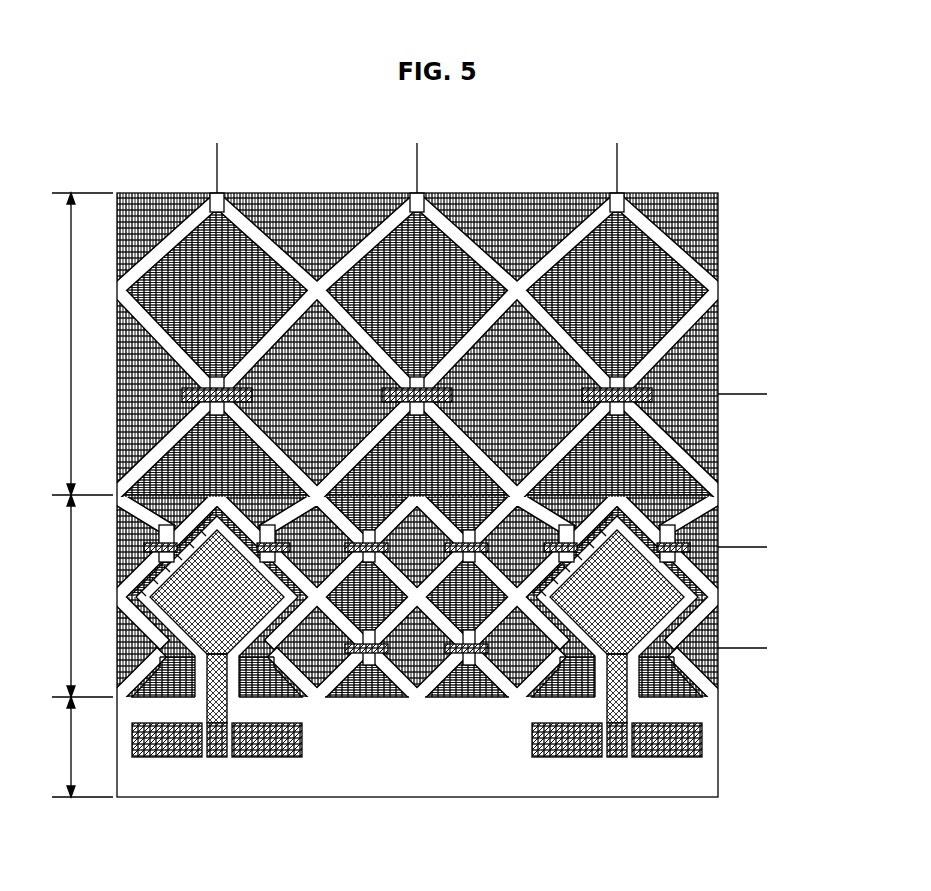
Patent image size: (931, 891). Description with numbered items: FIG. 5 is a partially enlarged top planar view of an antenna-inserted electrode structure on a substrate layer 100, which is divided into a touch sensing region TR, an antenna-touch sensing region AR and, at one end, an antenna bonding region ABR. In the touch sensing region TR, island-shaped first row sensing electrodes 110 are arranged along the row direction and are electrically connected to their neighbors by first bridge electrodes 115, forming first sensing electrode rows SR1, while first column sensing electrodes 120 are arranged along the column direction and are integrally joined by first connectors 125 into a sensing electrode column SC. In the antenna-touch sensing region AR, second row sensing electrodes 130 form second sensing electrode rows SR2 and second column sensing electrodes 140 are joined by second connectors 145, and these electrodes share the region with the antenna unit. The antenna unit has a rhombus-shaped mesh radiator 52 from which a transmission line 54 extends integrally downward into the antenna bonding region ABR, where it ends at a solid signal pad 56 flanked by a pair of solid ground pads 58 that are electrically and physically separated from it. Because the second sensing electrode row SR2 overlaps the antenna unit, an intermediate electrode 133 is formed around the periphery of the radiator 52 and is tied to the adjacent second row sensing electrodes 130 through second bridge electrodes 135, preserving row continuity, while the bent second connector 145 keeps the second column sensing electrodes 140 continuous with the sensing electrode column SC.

The substrate layer 100 is at (707, 777).
The first row sensing electrode 110 is at (522, 194).
The first bridge electrode 115 is at (655, 395).
The first column sensing electrode 120 is at (672, 275).
The first connector 125 is at (627, 188).
The second row sensing electrode 130 is at (675, 564).
The intermediate electrode 133 is at (672, 500).
The second bridge electrode 135 is at (670, 542).
The second column sensing electrode 140 is at (471, 693).
The second connector 145 is at (671, 606).
The radiator 52 is at (670, 613).
The transmission line 54 is at (699, 690).
The signal pad 56 is at (214, 760).
The ground pad 58 is at (146, 760).
The sensing electrode column SC is at (219, 168).
The first sensing electrode row SR1 is at (767, 394).
The second sensing electrode row SR2 is at (767, 547).
The touch sensing region TR is at (54, 344).
The antenna-touch sensing region AR is at (54, 596).
The antenna bonding region ABR is at (47, 747).